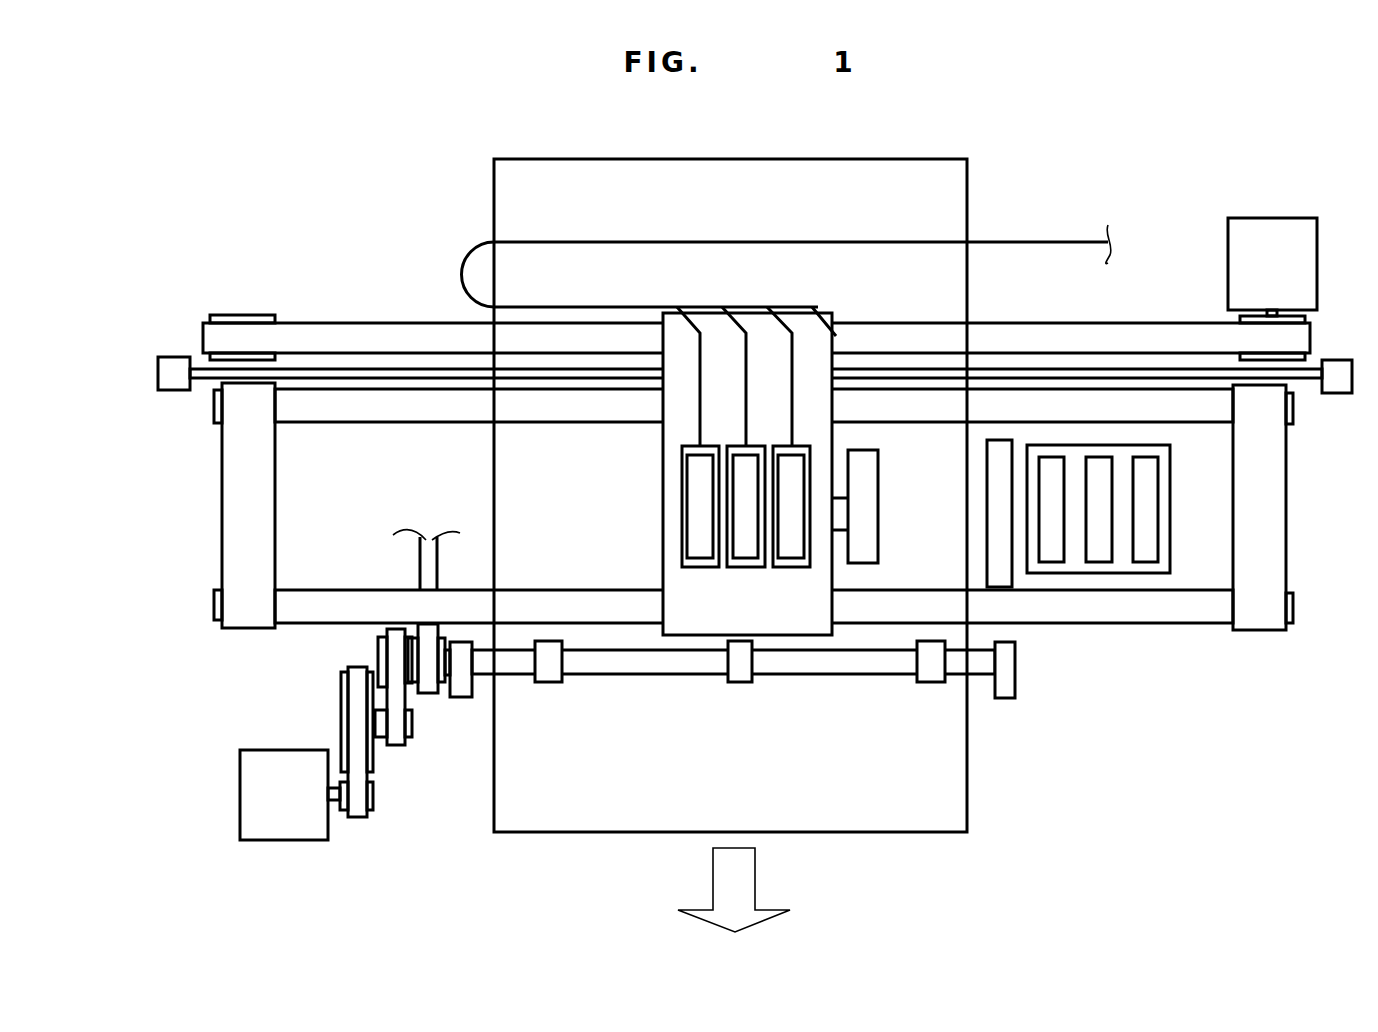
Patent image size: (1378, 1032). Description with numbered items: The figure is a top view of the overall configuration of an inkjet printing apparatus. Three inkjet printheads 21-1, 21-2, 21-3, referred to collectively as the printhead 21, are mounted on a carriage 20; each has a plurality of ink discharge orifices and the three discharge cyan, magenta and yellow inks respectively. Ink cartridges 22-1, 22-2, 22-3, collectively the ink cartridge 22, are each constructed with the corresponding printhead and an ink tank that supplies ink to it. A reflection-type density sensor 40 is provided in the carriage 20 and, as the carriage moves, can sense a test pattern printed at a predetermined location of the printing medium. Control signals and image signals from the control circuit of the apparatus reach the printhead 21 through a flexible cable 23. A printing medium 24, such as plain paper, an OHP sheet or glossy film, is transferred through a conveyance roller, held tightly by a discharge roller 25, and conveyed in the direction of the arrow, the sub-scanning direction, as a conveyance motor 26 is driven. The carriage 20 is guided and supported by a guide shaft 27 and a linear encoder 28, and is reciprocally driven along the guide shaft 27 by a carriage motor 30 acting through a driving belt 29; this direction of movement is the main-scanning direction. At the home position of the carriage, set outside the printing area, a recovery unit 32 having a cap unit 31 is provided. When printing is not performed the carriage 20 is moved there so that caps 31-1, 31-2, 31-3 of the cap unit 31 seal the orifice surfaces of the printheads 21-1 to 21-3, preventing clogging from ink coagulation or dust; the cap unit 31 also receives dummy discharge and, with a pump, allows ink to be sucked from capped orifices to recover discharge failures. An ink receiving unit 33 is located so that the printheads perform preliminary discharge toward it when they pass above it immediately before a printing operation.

The carriage 20 is at (675, 628).
The printhead 21 is at (780, 636).
The inkjet printhead 21-1 is at (702, 562).
The inkjet printhead 21-2 is at (747, 562).
The inkjet printhead 21-3 is at (793, 562).
The ink cartridge 22 is at (657, 502).
The ink cartridge 22-1 is at (698, 470).
The ink cartridge 22-2 is at (742, 497).
The ink cartridge 22-3 is at (790, 520).
The flexible cable 23 is at (468, 263).
The printing medium 24 is at (755, 172).
The discharge roller 25 is at (580, 668).
The conveyance motor 26 is at (288, 825).
The guide shaft 27 is at (318, 407).
The linear encoder 28 is at (410, 375).
The driving belt 29 is at (333, 340).
The carriage motor 30 is at (1268, 237).
The cap unit 31 is at (1119, 633).
The cap 31-1 is at (1051, 556).
The cap 31-2 is at (1095, 556).
The cap 31-3 is at (1144, 556).
The recovery unit 32 is at (1105, 440).
The ink receiving unit 33 is at (1000, 440).
The reflection-type density sensor 40 is at (882, 528).